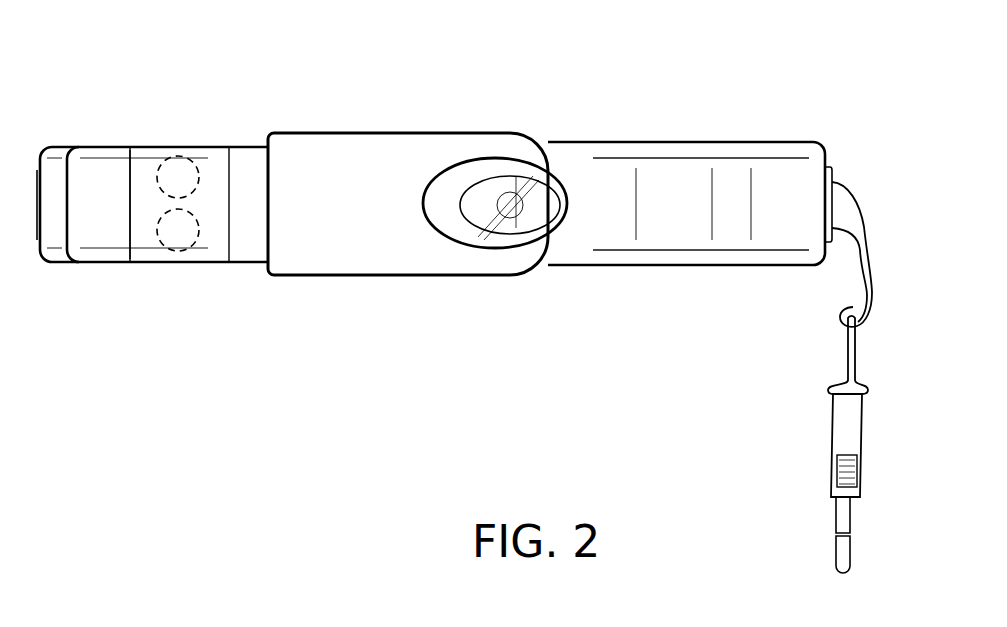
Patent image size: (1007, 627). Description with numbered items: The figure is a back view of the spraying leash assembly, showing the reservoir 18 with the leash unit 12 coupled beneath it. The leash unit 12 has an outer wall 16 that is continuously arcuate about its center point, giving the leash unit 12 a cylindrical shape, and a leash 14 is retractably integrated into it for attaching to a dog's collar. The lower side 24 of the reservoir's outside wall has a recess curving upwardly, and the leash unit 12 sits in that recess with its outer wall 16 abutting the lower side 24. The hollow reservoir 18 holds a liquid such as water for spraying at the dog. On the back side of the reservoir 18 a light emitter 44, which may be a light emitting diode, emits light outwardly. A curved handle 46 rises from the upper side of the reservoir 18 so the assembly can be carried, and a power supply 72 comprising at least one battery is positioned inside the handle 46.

The leash unit 12 is at (665, 120).
The leash 14 is at (858, 221).
The outer wall 16 is at (768, 168).
The reservoir 18 is at (361, 108).
The lower side 24 is at (130, 187).
The light emitter 44 is at (523, 213).
The handle 46 is at (60, 148).
The power supply 72 is at (187, 170).